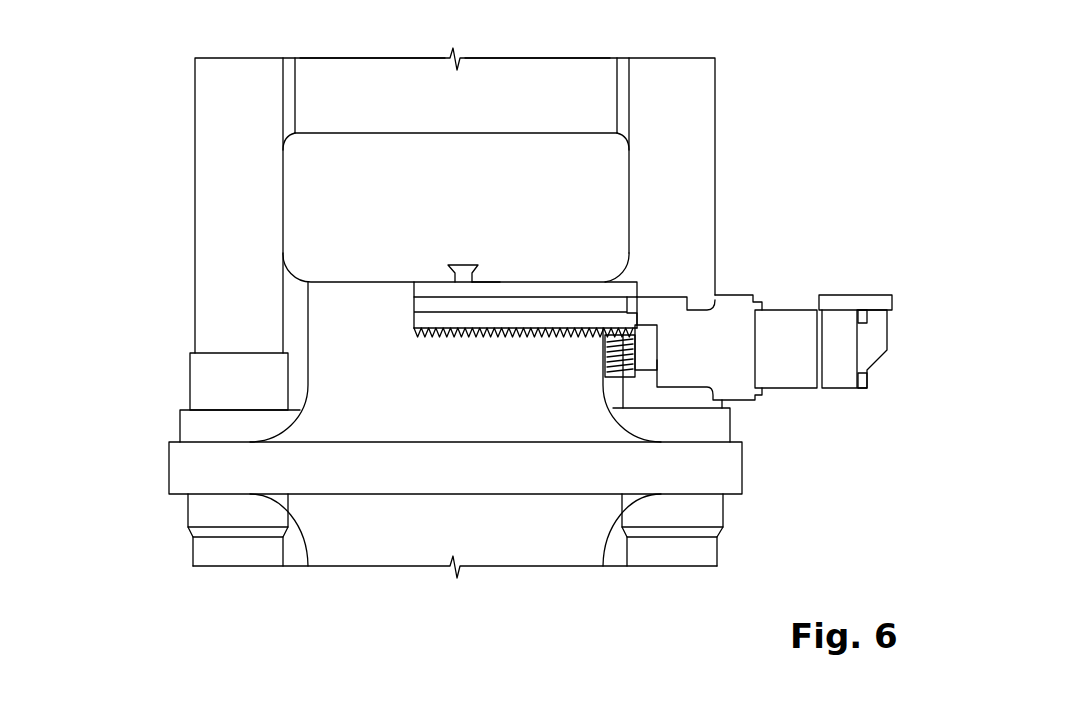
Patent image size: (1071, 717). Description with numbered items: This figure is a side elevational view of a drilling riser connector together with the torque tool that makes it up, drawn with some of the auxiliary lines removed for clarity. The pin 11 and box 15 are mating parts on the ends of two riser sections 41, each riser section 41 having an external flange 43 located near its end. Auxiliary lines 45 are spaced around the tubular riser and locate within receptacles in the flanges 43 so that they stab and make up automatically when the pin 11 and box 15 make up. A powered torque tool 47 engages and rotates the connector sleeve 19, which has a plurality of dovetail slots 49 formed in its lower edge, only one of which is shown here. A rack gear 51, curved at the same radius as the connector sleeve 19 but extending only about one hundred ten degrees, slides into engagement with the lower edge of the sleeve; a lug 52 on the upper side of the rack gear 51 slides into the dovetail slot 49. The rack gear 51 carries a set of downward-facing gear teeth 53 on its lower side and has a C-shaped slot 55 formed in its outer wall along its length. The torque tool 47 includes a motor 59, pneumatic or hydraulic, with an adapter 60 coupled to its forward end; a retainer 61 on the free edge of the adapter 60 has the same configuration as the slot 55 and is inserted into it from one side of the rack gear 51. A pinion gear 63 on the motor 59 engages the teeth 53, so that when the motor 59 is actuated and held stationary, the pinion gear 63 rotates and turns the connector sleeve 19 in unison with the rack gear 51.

The pin 11 is at (325, 338).
The box 15 is at (358, 82).
The connector sleeve 19 is at (310, 173).
The riser section 41 is at (348, 548).
The external flange 43 is at (205, 467).
The auxiliary line 45 is at (215, 230).
The torque tool 47 is at (823, 217).
The dovetail slot 49 is at (478, 282).
The rack gear 51 is at (427, 291).
The lug 52 is at (462, 267).
The gear teeth 53 is at (465, 340).
The slot 55 is at (440, 303).
The motor 59 is at (785, 322).
The adapter 60 is at (723, 322).
The retainer 61 is at (637, 297).
The pinion gear 63 is at (617, 368).